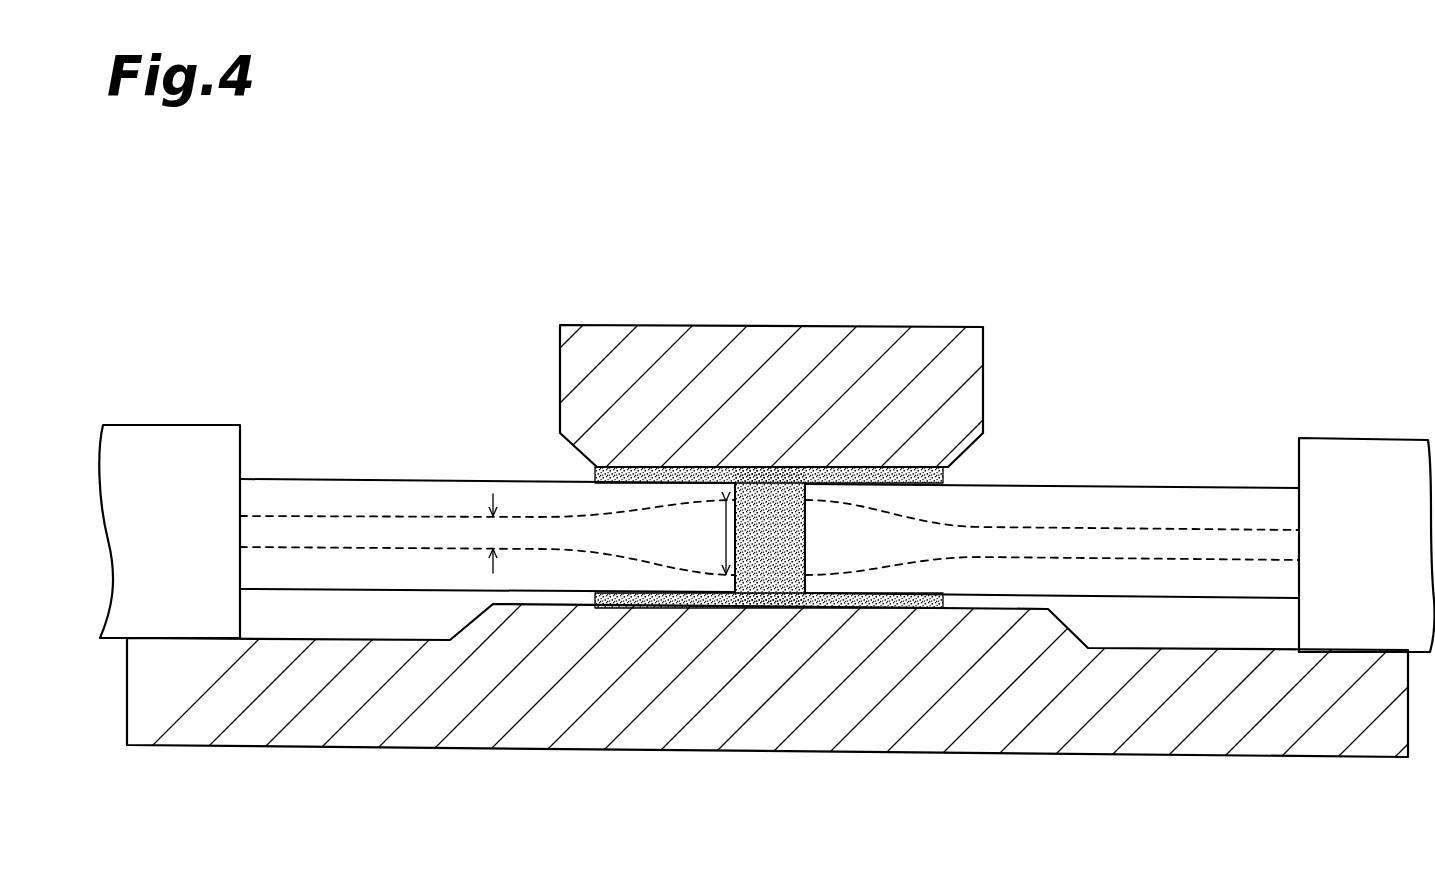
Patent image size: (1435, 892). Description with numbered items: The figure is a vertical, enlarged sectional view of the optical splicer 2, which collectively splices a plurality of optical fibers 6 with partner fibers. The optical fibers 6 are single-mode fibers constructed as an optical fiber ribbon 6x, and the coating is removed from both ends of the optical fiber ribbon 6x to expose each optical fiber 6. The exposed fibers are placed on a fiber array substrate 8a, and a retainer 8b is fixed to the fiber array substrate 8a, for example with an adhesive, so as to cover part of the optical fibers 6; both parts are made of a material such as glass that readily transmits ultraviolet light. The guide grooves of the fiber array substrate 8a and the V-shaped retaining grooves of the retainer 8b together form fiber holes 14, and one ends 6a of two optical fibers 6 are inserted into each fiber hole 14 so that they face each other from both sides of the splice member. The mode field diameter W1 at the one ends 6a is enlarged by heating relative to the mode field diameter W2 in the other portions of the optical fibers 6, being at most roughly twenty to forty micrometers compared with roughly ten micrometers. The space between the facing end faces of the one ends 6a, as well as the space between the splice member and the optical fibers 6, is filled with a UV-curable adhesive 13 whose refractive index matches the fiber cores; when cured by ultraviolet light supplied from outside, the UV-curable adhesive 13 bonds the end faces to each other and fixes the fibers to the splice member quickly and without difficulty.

The optical splicer 2 is at (955, 221).
The optical fiber 6 is at (315, 478).
The one end of optical fiber 6a is at (695, 540).
The optical fiber ribbon 6x is at (183, 425).
The fiber array substrate 8a is at (1003, 757).
The retainer 8b is at (818, 327).
The UV-curable adhesive 13 is at (768, 575).
The fiber hole 14 is at (900, 467).
The mode field diameter in one ends W1 is at (724, 538).
The mode field diameter in other portions W2 is at (490, 533).